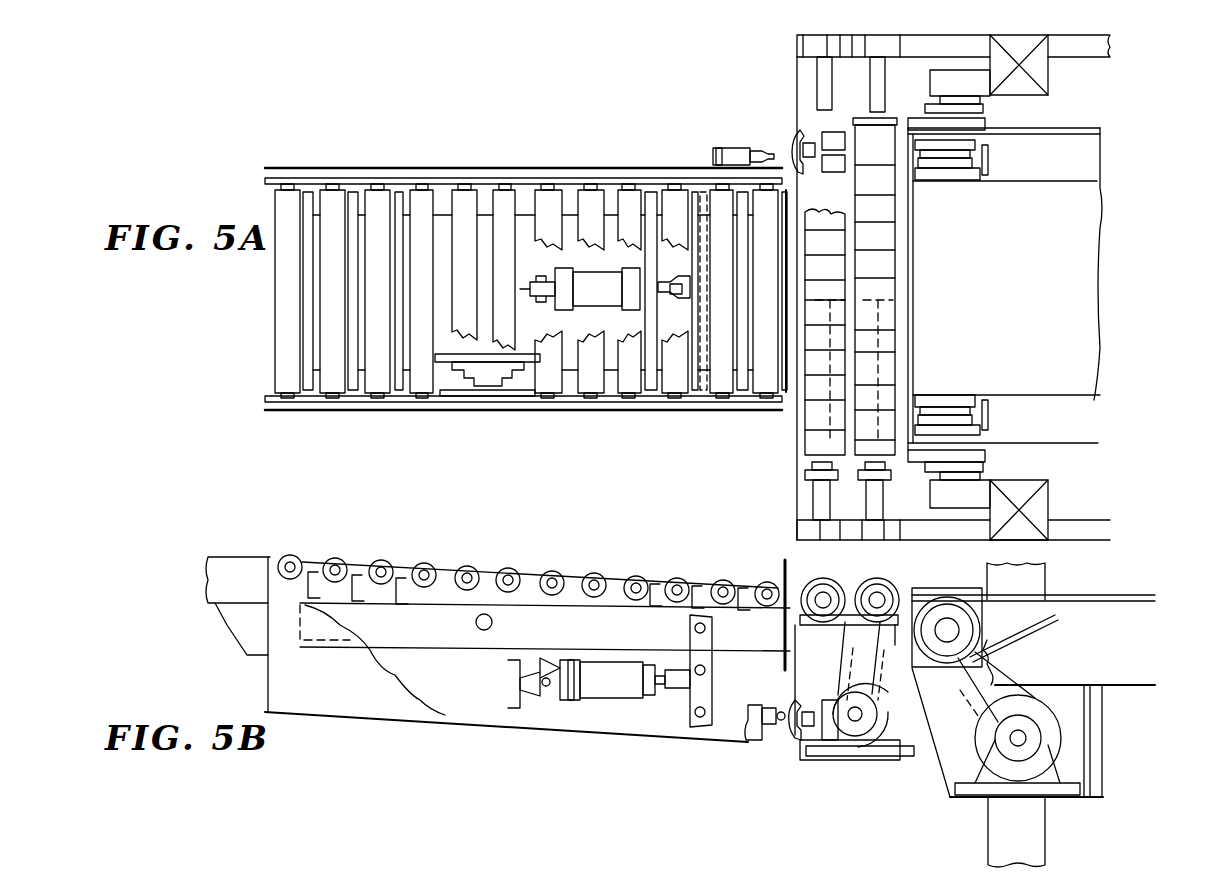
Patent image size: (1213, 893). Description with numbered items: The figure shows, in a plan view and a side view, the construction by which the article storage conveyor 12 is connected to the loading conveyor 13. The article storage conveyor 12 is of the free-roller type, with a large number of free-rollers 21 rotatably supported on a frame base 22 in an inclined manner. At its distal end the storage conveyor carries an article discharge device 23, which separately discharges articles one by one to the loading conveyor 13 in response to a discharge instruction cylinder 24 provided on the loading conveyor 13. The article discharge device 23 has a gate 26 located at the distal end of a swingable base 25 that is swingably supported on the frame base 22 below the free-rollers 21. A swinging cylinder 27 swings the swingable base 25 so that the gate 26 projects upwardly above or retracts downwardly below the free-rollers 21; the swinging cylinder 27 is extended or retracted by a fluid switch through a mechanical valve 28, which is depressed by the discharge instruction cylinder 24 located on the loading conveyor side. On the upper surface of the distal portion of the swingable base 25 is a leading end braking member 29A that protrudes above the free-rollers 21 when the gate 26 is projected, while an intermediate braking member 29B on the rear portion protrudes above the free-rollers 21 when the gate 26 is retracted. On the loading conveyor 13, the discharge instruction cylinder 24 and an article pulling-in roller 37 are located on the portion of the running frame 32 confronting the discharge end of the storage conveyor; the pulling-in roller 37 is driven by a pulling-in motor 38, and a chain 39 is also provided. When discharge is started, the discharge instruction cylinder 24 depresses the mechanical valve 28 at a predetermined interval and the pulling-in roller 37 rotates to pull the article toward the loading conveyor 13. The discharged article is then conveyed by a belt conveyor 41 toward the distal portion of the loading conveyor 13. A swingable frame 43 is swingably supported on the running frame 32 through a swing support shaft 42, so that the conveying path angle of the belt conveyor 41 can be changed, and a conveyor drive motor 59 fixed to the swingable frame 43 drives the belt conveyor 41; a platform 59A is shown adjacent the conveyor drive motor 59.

In FIG. 5A, the article temporary storage conveyor 12 is at (513, 165).
In FIG. 5B, the article temporary storage conveyor 12 is at (446, 560).
In FIG. 5A, the loading conveyor 13 is at (1115, 100).
In FIG. 5B, the loading conveyor 13 is at (1140, 588).
In FIG. 5A, the free-rollers 21 is at (275, 293).
In FIG. 5B, the free-rollers 21 is at (292, 572).
In FIG. 5A, the frame base 22 is at (310, 172).
In FIG. 5B, the frame base 22 is at (272, 690).
In FIG. 5A, the article discharge device 23 is at (710, 143).
In FIG. 5B, the article discharge device 23 is at (755, 745).
In FIG. 5A, the discharge instruction cylinder 24 is at (796, 130).
In FIG. 5B, the discharge instruction cylinder 24 is at (796, 704).
In FIG. 5A, the swingable base 25 is at (520, 368).
In FIG. 5B, the swingable base 25 is at (470, 625).
In FIG. 5A, the gate 26 is at (786, 380).
In FIG. 5B, the gate 26 is at (782, 565).
In FIG. 5A, the swinging cylinder 27 is at (606, 306).
In FIG. 5B, the swinging cylinder 27 is at (607, 700).
In FIG. 5A, the mechanical valve 28 is at (742, 148).
In FIG. 5B, the mechanical valve 28 is at (768, 733).
In FIG. 5A, the leading end braking member 29A is at (695, 192).
In FIG. 5B, the leading end braking member 29A is at (660, 580).
In FIG. 5A, the intermediate braking member 29B is at (296, 372).
In FIG. 5B, the intermediate braking member 29B is at (312, 576).
In FIG. 5A, the running frame 32 is at (1048, 72).
In FIG. 5B, the running frame 32 is at (1045, 825).
In FIG. 5A, the article pulling-in roller 37 is at (893, 262).
In FIG. 5B, the article pulling-in roller 37 is at (872, 580).
In FIG. 5A, the pulling-in motor 38 is at (878, 360).
In FIG. 5B, the pulling-in motor 38 is at (880, 710).
In FIG. 5B, the chain 39 is at (848, 655).
In FIG. 5A, the belt conveyor 41 is at (1092, 265).
In FIG. 5B, the belt conveyor 41 is at (1035, 612).
In FIG. 5A, the swing support shaft 42 is at (965, 100).
In FIG. 5B, the swing support shaft 42 is at (943, 628).
In FIG. 5A, the swingable frame 43 is at (1092, 155).
In FIG. 5B, the swingable frame 43 is at (1150, 600).
In FIG. 5B, the conveyor drive motor 59 is at (1062, 735).
In FIG. 5B, the pulley platform 59A is at (1005, 672).